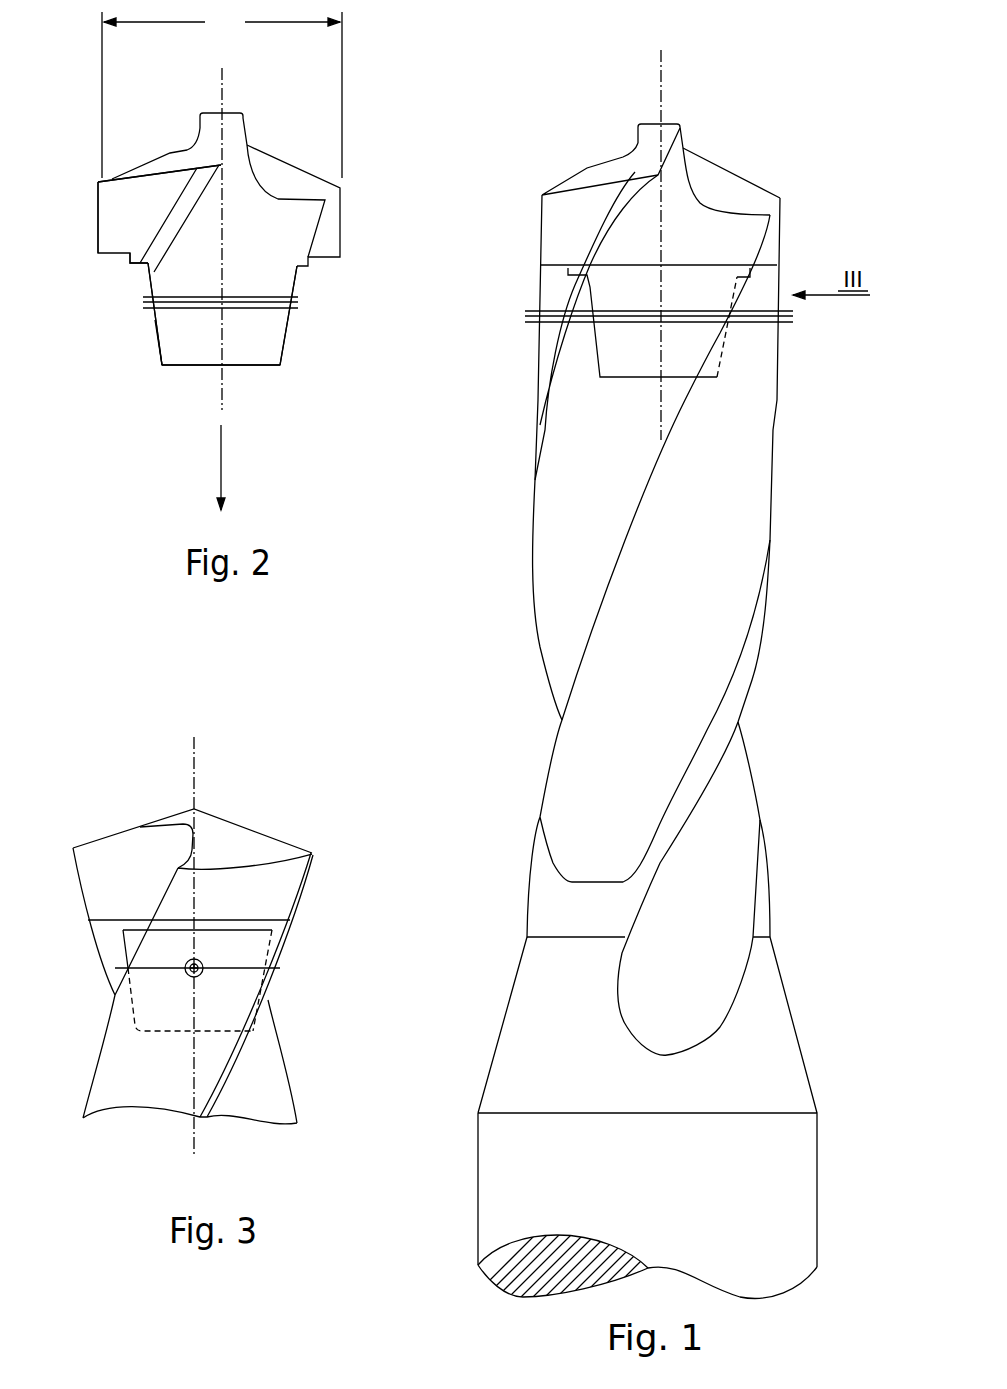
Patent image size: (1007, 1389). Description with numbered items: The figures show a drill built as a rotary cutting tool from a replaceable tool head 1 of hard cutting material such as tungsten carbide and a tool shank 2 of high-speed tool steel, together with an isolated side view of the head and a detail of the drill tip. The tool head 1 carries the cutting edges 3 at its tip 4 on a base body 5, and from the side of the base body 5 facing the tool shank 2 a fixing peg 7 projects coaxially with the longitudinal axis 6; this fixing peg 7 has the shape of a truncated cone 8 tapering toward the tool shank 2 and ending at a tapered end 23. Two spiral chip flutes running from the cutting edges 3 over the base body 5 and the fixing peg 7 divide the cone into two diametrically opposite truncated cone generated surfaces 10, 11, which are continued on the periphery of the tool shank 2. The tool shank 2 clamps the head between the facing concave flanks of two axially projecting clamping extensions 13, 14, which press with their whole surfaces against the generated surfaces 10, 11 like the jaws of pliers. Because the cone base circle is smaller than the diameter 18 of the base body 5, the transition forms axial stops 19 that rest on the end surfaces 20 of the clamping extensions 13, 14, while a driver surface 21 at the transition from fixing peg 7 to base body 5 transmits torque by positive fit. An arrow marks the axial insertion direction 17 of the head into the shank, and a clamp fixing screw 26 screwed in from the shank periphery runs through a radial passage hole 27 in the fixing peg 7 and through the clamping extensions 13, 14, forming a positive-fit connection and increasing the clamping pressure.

In FIG. 2, the tool head 1 is at (137, 313).
In FIG. 1, the tool head 1 is at (569, 230).
In FIG. 1, the tool shank 2 is at (639, 1190).
In FIG. 2, the cutting edges 3 is at (167, 154).
In FIG. 3, the cutting edges 3 is at (138, 826).
In FIG. 1, the cutting edges 3 is at (586, 168).
In FIG. 2, the tip 4 is at (217, 115).
In FIG. 3, the tip 4 is at (190, 808).
In FIG. 1, the tip 4 is at (650, 123).
In FIG. 2, the base body 5 is at (130, 215).
In FIG. 3, the base body 5 is at (252, 890).
In FIG. 1, the base body 5 is at (684, 217).
In FIG. 2, the longitudinal axis 6 is at (223, 88).
In FIG. 3, the longitudinal axis 6 is at (196, 770).
In FIG. 1, the longitudinal axis 6 is at (663, 80).
In FIG. 2, the fixing peg 7 is at (243, 345).
In FIG. 3, the fixing peg 7 is at (125, 955).
In FIG. 2, the truncated cone 8 is at (155, 337).
In FIG. 2, the truncated cone generated surface 10 is at (153, 320).
In FIG. 2, the truncated cone generated surface 11 is at (273, 352).
In FIG. 1, the clamping extension 13 is at (752, 340).
In FIG. 1, the clamping extension 14 is at (555, 292).
In FIG. 2, the axial insertion direction 17 is at (223, 450).
In FIG. 2, the diameter 18 is at (222, 93).
In FIG. 2, the axial stops 19 is at (263, 230).
In FIG. 1, the axial stops 19 is at (705, 248).
In FIG. 1, the end surfaces 20 is at (553, 264).
In FIG. 2, the driver surface 21 is at (126, 262).
In FIG. 3, the driver surface 21 is at (122, 925).
In FIG. 2, the tapered end 23 is at (187, 368).
In FIG. 3, the clamp fixing screw 26 is at (203, 966).
In FIG. 2, the passage hole 27 is at (252, 312).
In FIG. 1, the passage hole 27 is at (622, 321).